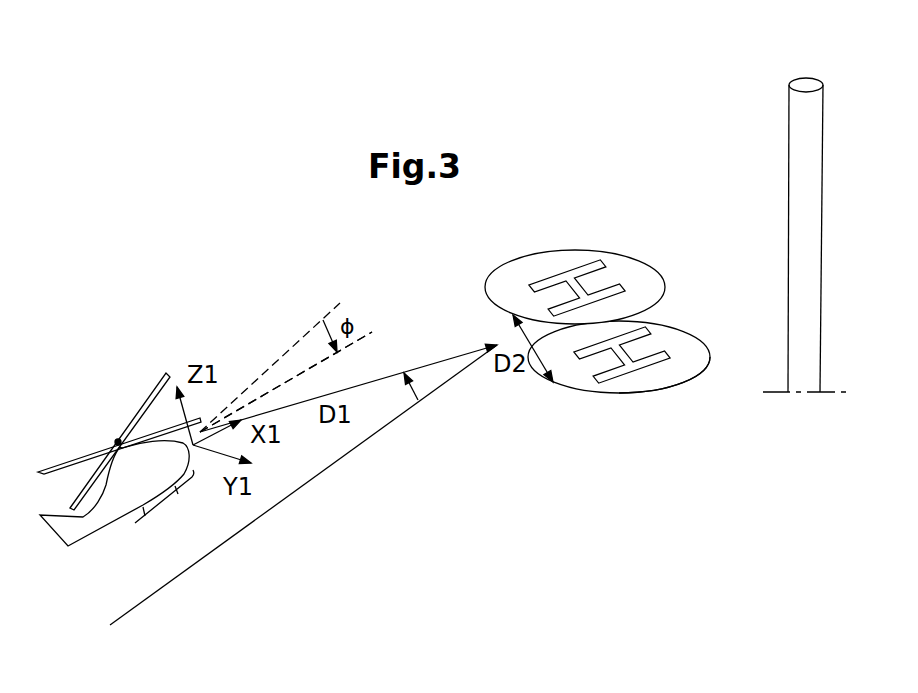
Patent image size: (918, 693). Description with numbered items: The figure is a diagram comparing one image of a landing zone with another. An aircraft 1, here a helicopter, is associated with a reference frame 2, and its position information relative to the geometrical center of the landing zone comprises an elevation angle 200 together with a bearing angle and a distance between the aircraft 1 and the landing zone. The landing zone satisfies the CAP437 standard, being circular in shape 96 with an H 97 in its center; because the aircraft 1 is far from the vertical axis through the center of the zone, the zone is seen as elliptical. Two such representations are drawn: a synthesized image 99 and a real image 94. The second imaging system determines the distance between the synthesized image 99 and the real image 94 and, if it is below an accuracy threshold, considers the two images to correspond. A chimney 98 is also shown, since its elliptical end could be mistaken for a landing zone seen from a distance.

The aircraft 1 is at (125, 483).
The reference frame 2 is at (156, 351).
The real image 94 is at (606, 395).
The circular shape 96 is at (683, 385).
The H 97 is at (665, 352).
The chimney 98 is at (808, 83).
The synthesized image 99 is at (628, 247).
The elevation angle 200 is at (317, 365).